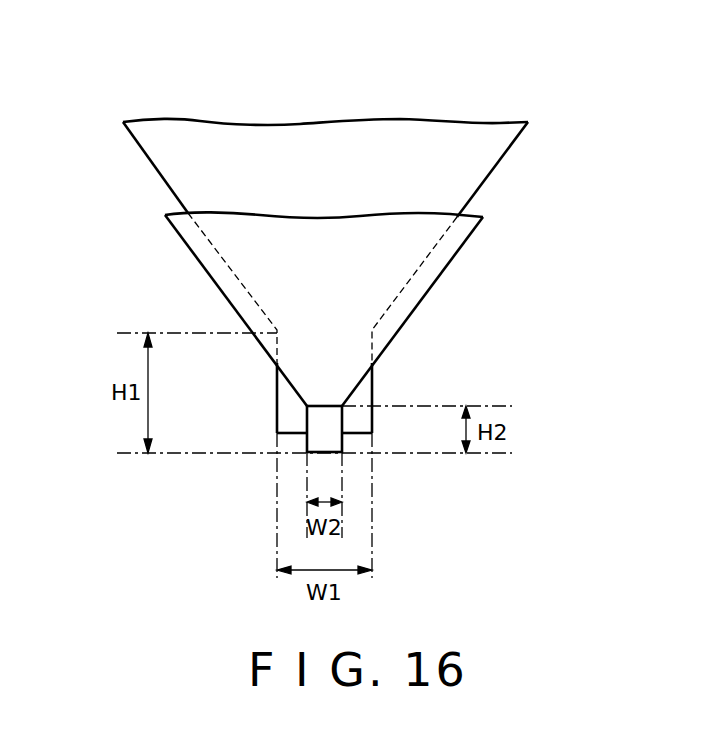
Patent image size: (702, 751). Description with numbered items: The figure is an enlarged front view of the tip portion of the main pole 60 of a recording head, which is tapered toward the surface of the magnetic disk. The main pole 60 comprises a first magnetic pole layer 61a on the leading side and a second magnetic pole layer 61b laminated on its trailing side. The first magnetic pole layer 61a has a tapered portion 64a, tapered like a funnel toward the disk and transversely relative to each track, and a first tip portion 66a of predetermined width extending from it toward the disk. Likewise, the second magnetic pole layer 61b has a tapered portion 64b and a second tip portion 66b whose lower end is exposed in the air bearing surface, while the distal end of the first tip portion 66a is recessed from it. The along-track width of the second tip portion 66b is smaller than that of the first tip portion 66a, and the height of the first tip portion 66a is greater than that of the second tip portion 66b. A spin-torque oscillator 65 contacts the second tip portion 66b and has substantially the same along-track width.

The main pole 60 is at (331, 265).
The first magnetic pole layer 61a is at (183, 163).
The second magnetic pole layer 61b is at (422, 280).
The tapered portion 64a is at (485, 162).
The tapered portion 64b is at (218, 270).
The spin-torque oscillator 65 is at (325, 420).
The first tip portion 66a is at (282, 418).
The second tip portion 66b is at (343, 445).